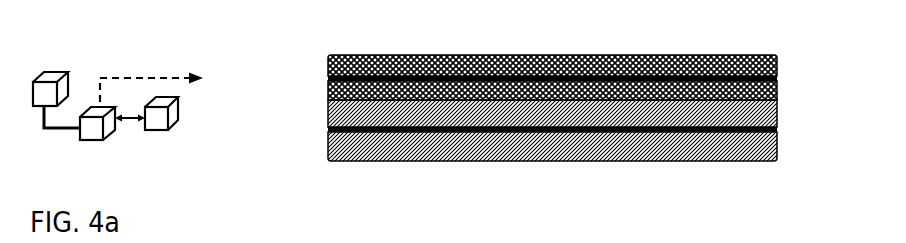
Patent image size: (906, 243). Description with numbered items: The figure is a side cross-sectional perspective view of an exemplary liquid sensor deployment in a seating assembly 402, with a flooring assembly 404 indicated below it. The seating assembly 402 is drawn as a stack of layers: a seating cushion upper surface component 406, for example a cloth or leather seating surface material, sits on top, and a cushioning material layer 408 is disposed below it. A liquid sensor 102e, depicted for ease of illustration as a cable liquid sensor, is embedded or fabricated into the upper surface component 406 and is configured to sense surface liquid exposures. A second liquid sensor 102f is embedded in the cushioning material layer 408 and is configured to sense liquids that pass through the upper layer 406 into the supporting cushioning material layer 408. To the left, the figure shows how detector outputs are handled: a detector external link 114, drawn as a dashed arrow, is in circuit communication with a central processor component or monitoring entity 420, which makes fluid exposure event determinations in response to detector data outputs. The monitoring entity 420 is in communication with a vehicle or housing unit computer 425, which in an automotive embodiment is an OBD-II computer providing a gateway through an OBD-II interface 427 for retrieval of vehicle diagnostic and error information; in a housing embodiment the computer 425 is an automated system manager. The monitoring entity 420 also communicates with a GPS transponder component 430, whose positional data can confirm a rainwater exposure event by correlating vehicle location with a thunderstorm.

The vehicle or housing unit computer 425 is at (33, 107).
The OBD-II interface 427 is at (45, 70).
The central processor component or monitoring entity 420 is at (90, 140).
The Global Positioning System (GPS) transponder component 430 is at (156, 130).
The external link 114 is at (133, 78).
The seating assembly 402 is at (504, 85).
The seating cushion upper surface component 406 is at (328, 62).
The liquid sensor 102e is at (328, 80).
The cushioning material layer 408 is at (328, 116).
The liquid sensor 102f is at (328, 133).
The flooring assembly 404 is at (683, 242).